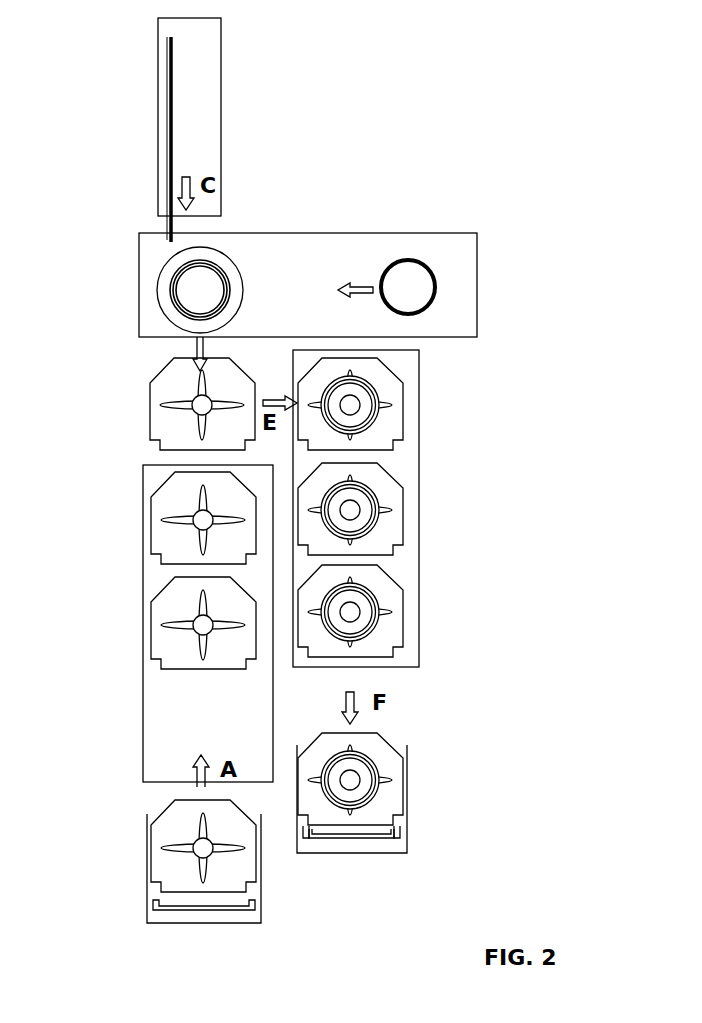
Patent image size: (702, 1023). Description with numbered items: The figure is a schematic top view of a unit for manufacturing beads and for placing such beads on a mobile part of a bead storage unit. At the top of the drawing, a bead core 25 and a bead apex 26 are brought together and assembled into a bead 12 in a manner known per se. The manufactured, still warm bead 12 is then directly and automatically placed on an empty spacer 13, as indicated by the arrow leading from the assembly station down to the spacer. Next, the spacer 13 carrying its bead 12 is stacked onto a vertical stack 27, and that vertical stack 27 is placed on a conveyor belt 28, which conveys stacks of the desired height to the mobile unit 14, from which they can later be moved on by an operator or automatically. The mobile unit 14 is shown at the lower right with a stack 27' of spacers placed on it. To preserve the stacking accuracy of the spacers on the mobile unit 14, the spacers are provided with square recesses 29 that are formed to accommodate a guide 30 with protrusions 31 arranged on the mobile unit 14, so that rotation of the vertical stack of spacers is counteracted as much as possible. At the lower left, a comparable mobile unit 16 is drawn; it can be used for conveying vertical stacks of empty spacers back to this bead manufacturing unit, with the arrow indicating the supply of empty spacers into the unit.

The bead 12 is at (160, 291).
The spacer 13 is at (160, 426).
The mobile unit 14 is at (380, 848).
The mobile unit 16 is at (150, 912).
The bead core 25 is at (435, 297).
The bead apex 26 is at (171, 165).
The vertical stack 27 is at (392, 404).
The stack of spacers 27' is at (382, 770).
The conveyor belt 28 is at (412, 466).
The square recesses 29 is at (395, 655).
The guide 30 is at (330, 839).
The protrusions 31 is at (303, 828).